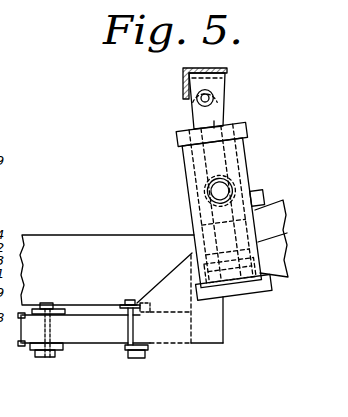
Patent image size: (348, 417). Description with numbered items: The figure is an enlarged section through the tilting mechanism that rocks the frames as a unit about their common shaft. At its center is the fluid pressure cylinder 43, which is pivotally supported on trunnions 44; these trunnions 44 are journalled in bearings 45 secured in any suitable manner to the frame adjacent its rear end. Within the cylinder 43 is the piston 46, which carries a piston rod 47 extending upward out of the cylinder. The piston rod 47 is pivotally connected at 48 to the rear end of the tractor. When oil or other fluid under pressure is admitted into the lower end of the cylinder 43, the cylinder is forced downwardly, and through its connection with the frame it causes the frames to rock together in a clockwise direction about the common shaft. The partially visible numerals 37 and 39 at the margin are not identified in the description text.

The frame member 37 is at (6, 187).
The support plate 39 is at (5, 222).
The fluid pressure cylinder 43 is at (183, 162).
The trunnions 44 is at (221, 192).
The bearings 45 is at (192, 193).
The piston 46 is at (258, 299).
The piston rod 47 is at (224, 121).
The pivotal connection 48 is at (213, 96).